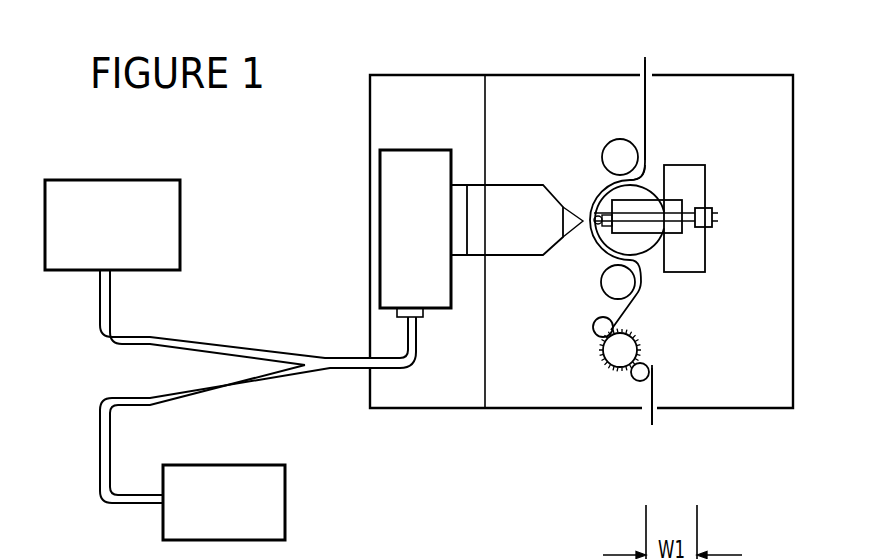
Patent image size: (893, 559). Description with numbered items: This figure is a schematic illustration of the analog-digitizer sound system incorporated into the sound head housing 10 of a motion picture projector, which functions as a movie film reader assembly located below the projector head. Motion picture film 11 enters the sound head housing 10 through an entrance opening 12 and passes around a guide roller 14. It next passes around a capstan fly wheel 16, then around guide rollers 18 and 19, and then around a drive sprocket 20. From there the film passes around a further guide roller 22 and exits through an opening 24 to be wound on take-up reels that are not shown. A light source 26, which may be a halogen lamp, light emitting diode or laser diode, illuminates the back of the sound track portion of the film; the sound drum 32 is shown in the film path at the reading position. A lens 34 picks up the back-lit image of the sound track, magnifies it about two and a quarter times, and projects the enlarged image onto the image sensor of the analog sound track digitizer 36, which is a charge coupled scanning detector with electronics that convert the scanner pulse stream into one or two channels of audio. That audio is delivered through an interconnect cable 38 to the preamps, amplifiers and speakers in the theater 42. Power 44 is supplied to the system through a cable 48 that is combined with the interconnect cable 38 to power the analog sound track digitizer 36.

The sound head housing 10 is at (806, 66).
The motion picture film 11 is at (645, 103).
The entrance opening 12 is at (648, 73).
The guide roller 14 is at (606, 152).
The capstan fly wheel 16 is at (640, 190).
The guide roller 18 is at (602, 287).
The guide roller 19 is at (593, 327).
The drive sprocket 20 is at (603, 355).
The guide roller 22 is at (634, 382).
The exit opening 24 is at (655, 405).
The light source 26 is at (712, 205).
The sound drum 32 is at (595, 248).
The lens 34 is at (533, 248).
The analog sound track digitizer 36 is at (381, 197).
The interconnect cable 38 is at (352, 357).
The theater 42 is at (286, 505).
The power 44 is at (52, 228).
The power cable 48 is at (100, 306).